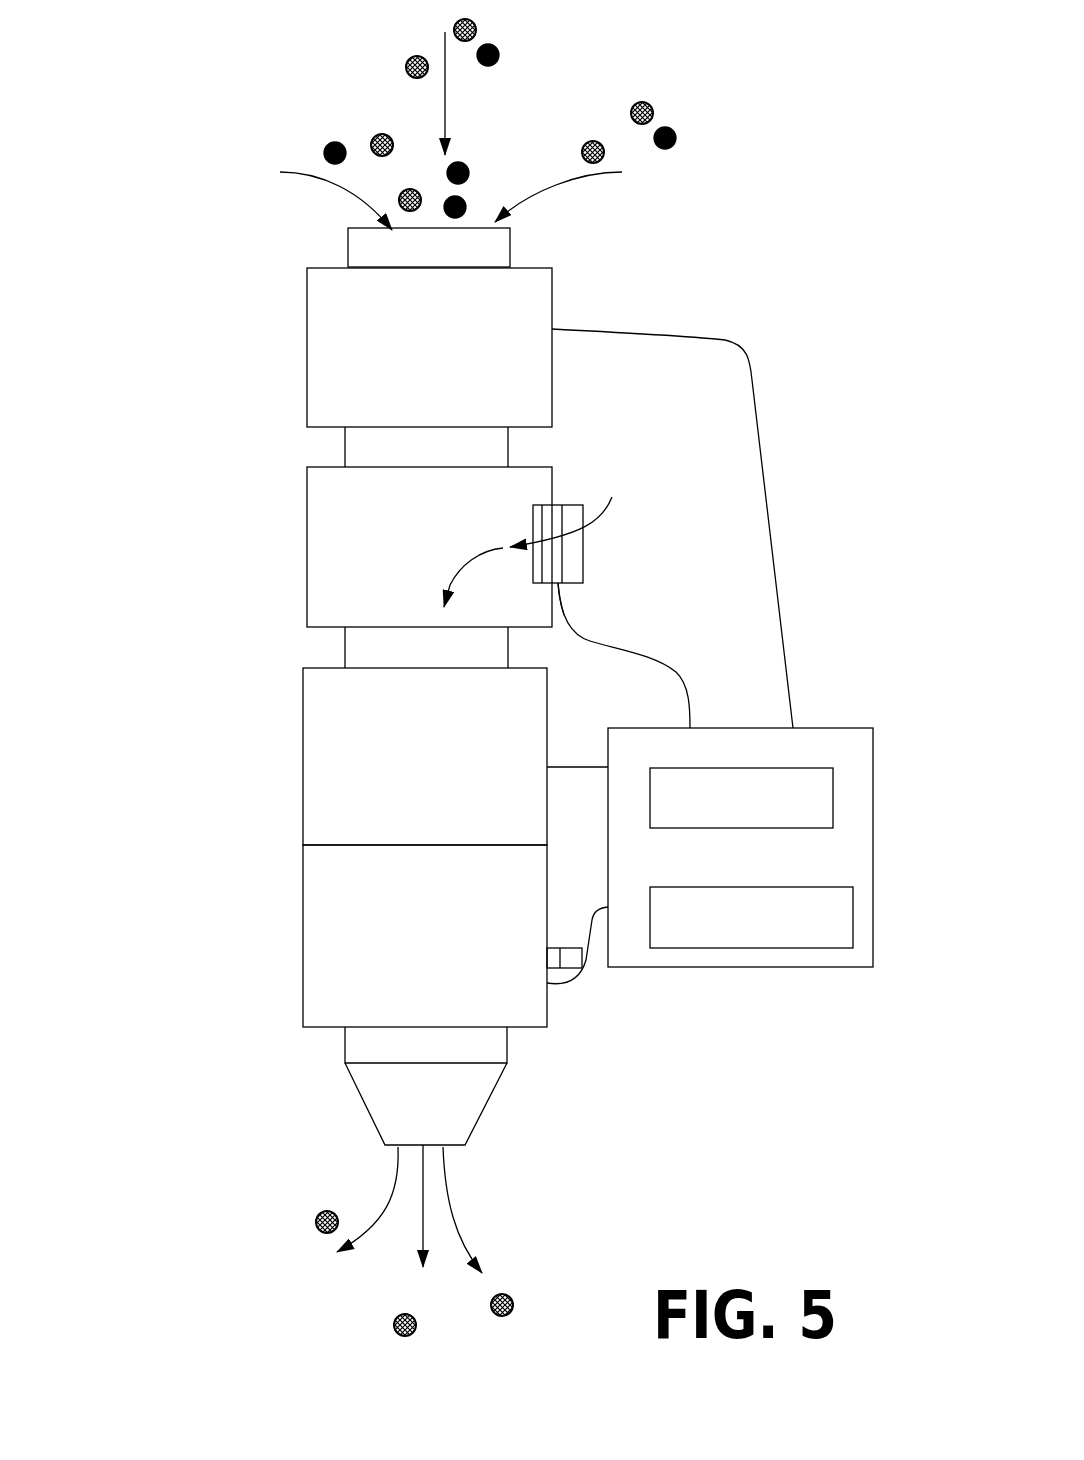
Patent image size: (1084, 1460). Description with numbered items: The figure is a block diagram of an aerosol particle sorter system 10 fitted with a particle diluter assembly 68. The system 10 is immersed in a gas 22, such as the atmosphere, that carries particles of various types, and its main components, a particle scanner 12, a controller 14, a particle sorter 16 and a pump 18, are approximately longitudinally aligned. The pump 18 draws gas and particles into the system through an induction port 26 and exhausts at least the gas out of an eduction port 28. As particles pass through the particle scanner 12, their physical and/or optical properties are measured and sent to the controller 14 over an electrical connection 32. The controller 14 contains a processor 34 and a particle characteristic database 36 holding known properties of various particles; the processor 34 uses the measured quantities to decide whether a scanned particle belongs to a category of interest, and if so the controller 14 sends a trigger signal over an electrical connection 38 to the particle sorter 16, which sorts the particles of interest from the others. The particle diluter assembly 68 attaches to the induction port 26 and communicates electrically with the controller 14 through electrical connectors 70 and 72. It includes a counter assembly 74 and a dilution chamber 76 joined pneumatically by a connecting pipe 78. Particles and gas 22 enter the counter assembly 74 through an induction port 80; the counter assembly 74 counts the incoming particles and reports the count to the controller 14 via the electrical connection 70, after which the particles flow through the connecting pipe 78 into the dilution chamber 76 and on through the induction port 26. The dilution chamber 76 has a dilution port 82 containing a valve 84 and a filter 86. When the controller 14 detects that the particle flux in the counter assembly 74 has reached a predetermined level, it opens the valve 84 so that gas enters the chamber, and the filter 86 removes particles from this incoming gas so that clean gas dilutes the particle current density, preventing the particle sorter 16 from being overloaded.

The aerosol particle sorter system 10 is at (177, 134).
The particle scanner 12 is at (349, 821).
The controller 14 is at (720, 870).
The particle sorter 16 is at (349, 1016).
The pump 18 is at (398, 1059).
The gas 22 is at (568, 59).
The induction port 26 is at (345, 652).
The eduction port 28 is at (393, 1085).
The electrical connection 32 is at (592, 767).
The processor 34 is at (720, 811).
The particle characteristic database 36 is at (720, 930).
The electrical connection 38 is at (573, 987).
The particle diluter assembly 68 is at (268, 407).
The electrical connector 70 is at (784, 617).
The electrical connector 72 is at (654, 655).
The counter assembly 74 is at (307, 332).
The dilution chamber 76 is at (307, 548).
The connecting pipe 78 is at (510, 453).
The induction port 80 is at (512, 242).
The dilution port 82 is at (572, 587).
The valve 84 is at (568, 505).
The filter 86 is at (532, 517).